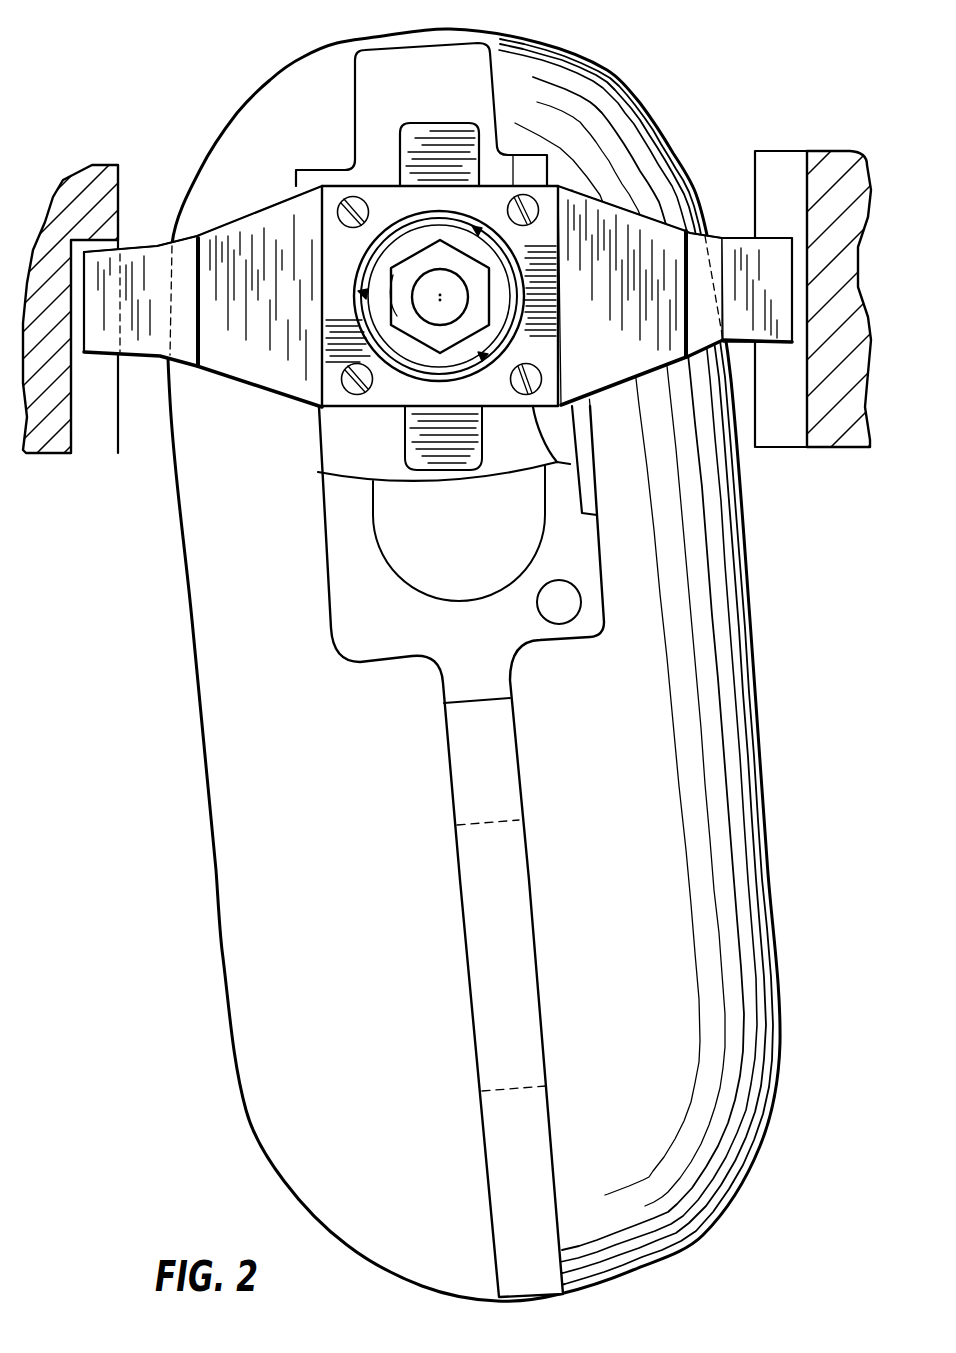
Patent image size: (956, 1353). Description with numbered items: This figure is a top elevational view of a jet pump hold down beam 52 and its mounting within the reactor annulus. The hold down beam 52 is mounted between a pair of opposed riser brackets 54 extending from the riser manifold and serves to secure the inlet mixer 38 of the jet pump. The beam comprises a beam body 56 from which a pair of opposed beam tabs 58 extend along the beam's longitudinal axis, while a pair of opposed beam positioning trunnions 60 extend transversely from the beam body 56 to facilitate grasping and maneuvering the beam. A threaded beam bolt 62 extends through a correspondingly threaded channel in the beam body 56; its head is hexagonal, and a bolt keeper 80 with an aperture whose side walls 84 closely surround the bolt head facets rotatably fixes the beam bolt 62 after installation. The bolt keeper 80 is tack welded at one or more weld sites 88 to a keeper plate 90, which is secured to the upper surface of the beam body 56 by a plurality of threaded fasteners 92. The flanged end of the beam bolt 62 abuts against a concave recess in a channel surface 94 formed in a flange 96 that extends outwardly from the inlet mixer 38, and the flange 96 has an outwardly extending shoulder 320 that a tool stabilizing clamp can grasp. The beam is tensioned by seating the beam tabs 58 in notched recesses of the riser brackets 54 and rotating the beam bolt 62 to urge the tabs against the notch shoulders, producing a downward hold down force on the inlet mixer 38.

The inlet mixer 38 is at (604, 64).
The outwardly-extending shoulder 320 is at (368, 58).
The beam positioning trunnions 60 is at (440, 122).
The jet pump hold down beam 52 is at (236, 205).
The riser brackets 54 is at (816, 152).
The beam body 56 is at (614, 372).
The beam tabs 58 is at (784, 332).
The threaded fasteners 92 is at (338, 186).
The keeper plate 90 is at (326, 392).
The bolt keeper 80 is at (399, 247).
The threaded beam bolt 62 is at (405, 277).
The aperture side walls 84 is at (395, 311).
The weld sites 88 is at (363, 293).
The channel surface 94 is at (409, 544).
The flange 96 is at (377, 647).